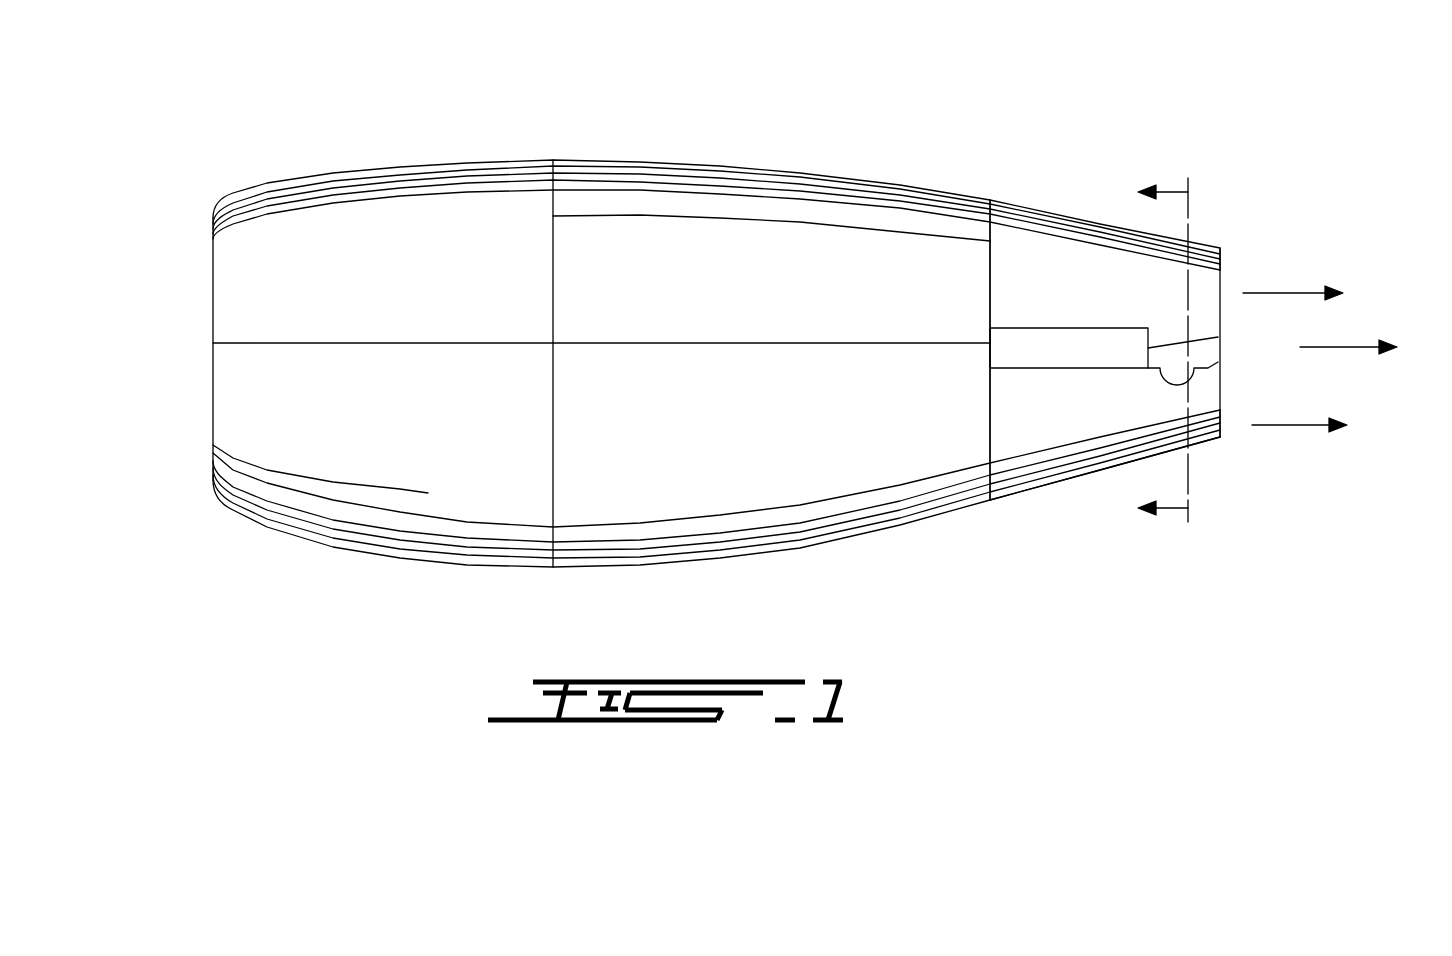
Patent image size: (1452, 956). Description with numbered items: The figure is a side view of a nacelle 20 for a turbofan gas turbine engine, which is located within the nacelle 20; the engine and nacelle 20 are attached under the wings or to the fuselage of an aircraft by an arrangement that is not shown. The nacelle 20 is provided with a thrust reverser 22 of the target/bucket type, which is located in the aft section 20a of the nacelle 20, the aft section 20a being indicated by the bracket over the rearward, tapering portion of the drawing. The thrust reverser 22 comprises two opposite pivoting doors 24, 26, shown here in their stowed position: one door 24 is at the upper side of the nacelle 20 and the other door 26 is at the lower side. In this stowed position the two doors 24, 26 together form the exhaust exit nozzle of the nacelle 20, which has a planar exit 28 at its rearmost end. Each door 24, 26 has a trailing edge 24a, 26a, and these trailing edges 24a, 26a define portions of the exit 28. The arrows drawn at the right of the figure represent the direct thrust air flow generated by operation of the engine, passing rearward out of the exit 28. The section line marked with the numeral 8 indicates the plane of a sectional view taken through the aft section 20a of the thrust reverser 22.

The nacelle 20 is at (754, 329).
The aft section 20a is at (1222, 168).
The thrust reverser 22 is at (1100, 540).
The pivoting door 24 is at (1190, 262).
The trailing edge 24a is at (1220, 268).
The pivoting door 26 is at (1130, 445).
The trailing edge 26a is at (1220, 405).
The planar exit 28 is at (1290, 362).
The section line 8- 8 is at (1184, 355).